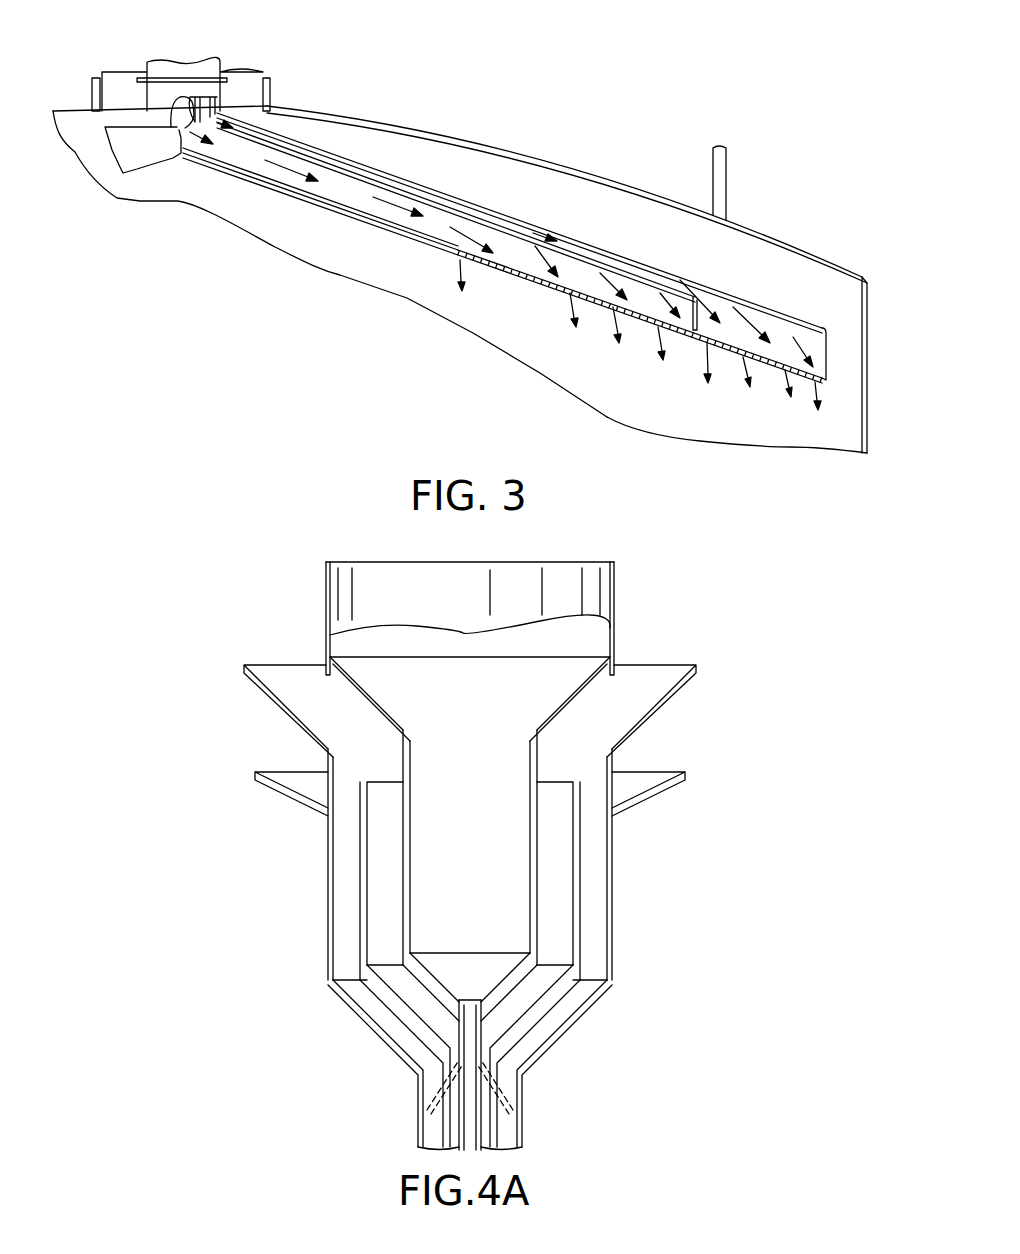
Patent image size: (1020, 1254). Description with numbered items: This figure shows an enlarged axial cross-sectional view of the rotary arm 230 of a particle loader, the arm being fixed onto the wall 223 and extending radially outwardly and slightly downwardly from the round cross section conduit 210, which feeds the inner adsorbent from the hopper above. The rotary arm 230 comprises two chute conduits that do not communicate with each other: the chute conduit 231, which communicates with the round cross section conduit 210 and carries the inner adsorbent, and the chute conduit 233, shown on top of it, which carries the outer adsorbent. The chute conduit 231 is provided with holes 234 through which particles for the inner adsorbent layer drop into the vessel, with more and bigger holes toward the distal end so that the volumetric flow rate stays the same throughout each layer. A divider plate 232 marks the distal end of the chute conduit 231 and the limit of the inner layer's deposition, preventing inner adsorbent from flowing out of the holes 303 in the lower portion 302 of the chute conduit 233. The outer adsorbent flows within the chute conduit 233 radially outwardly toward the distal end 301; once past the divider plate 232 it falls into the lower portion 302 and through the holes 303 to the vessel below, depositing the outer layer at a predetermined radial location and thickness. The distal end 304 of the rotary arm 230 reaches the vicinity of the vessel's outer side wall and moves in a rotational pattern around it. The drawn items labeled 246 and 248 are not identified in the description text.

The round cross section conduit 210 is at (180, 127).
The wall 223 is at (218, 97).
The rotary arm 230 is at (278, 189).
The chute conduit 231 is at (350, 212).
The chute conduit 233 is at (455, 208).
The holes 234 is at (535, 284).
The pipe 246 is at (724, 170).
The curved top wall 248 is at (508, 150).
The divider plate 232 is at (700, 308).
The distal end 301 is at (813, 318).
The lower portion 302 is at (740, 338).
The holes 303 is at (773, 360).
The distal end 304 is at (826, 352).